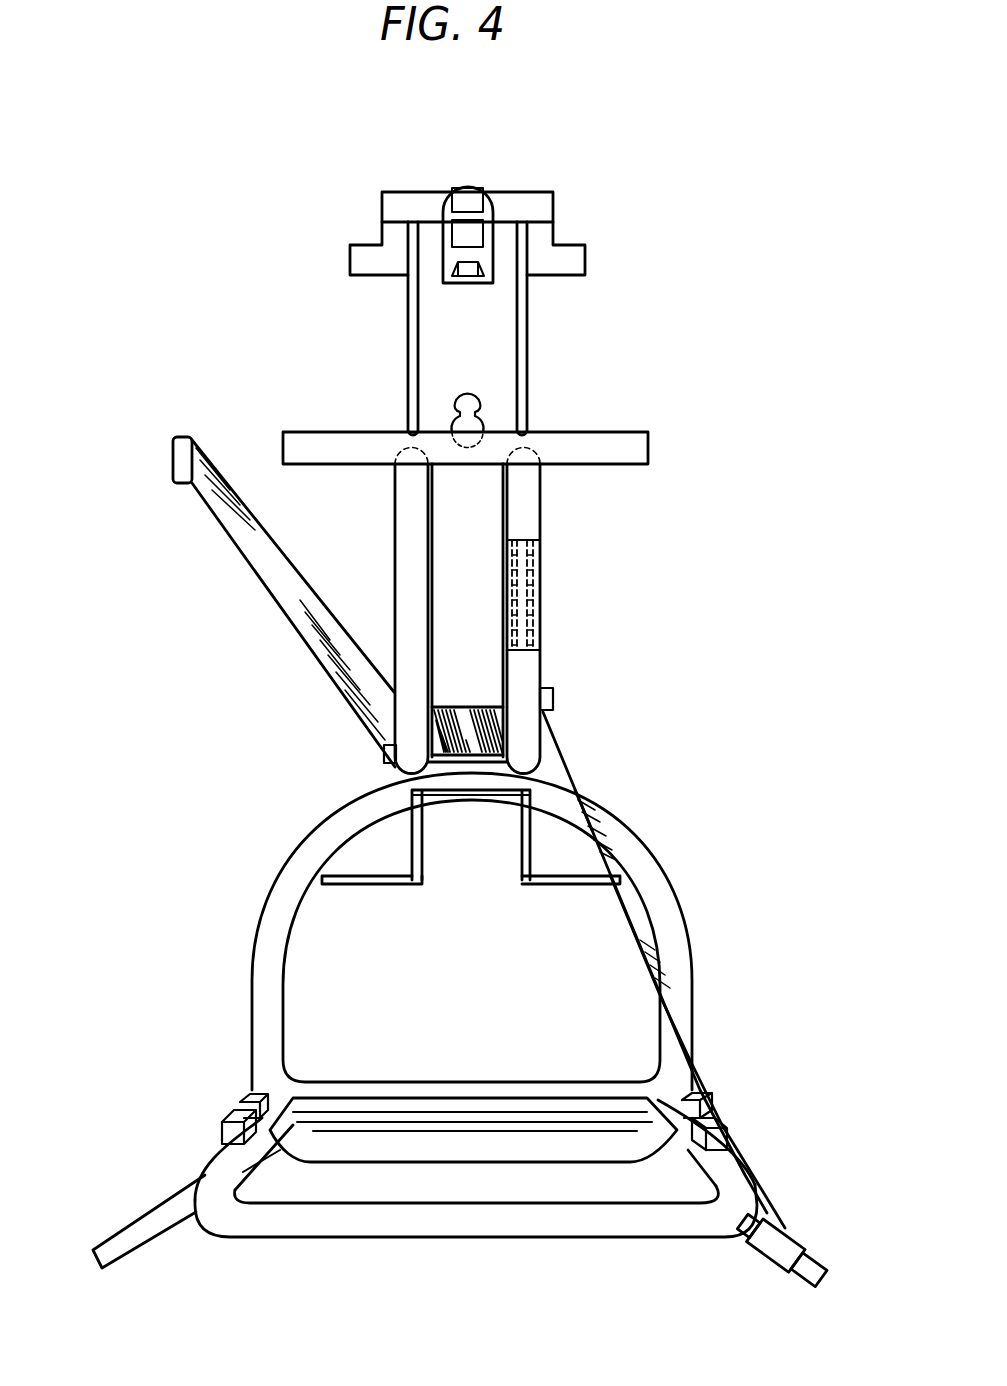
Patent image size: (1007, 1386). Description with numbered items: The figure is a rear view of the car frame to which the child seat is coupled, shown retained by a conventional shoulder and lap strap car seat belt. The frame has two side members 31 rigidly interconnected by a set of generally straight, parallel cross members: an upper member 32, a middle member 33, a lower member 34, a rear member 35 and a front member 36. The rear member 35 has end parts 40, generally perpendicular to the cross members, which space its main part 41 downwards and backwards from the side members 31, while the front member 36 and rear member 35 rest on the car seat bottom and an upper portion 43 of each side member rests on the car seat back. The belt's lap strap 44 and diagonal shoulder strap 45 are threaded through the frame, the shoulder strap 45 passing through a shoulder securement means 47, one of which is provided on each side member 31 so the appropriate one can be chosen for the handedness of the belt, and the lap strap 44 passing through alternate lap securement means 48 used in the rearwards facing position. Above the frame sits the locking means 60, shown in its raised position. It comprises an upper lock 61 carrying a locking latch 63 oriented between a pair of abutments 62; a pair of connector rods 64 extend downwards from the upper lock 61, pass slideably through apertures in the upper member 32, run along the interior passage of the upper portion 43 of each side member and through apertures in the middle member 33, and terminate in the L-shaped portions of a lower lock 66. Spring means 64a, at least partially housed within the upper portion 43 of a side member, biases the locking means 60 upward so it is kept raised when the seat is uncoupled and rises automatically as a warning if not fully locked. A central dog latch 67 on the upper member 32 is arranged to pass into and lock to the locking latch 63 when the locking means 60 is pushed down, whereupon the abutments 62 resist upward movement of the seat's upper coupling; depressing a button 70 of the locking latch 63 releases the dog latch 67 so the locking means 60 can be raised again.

The side members 31 is at (407, 677).
The upper member 32 is at (610, 440).
The middle member 33 is at (497, 790).
The lower member 34 is at (545, 1082).
The rear member 35 is at (601, 1222).
The front member 36 is at (373, 1143).
The end parts 40 is at (217, 1172).
The main part 41 is at (397, 1240).
The upper portion 43 is at (527, 511).
The lap strap 44 is at (176, 1208).
The diagonal shoulder strap 45 is at (218, 518).
The shoulder securement means 47 is at (385, 757).
The alternate lap securement means 48 is at (240, 1100).
The locking means 60 is at (602, 290).
The upper lock 61 is at (586, 204).
The abutments 62 is at (356, 265).
The locking latch 63 is at (484, 214).
The connector rods 64 is at (408, 355).
The spring means 64a is at (538, 626).
The lower lock 66 is at (525, 886).
The dog latch 67 is at (455, 402).
The button 70 is at (457, 230).